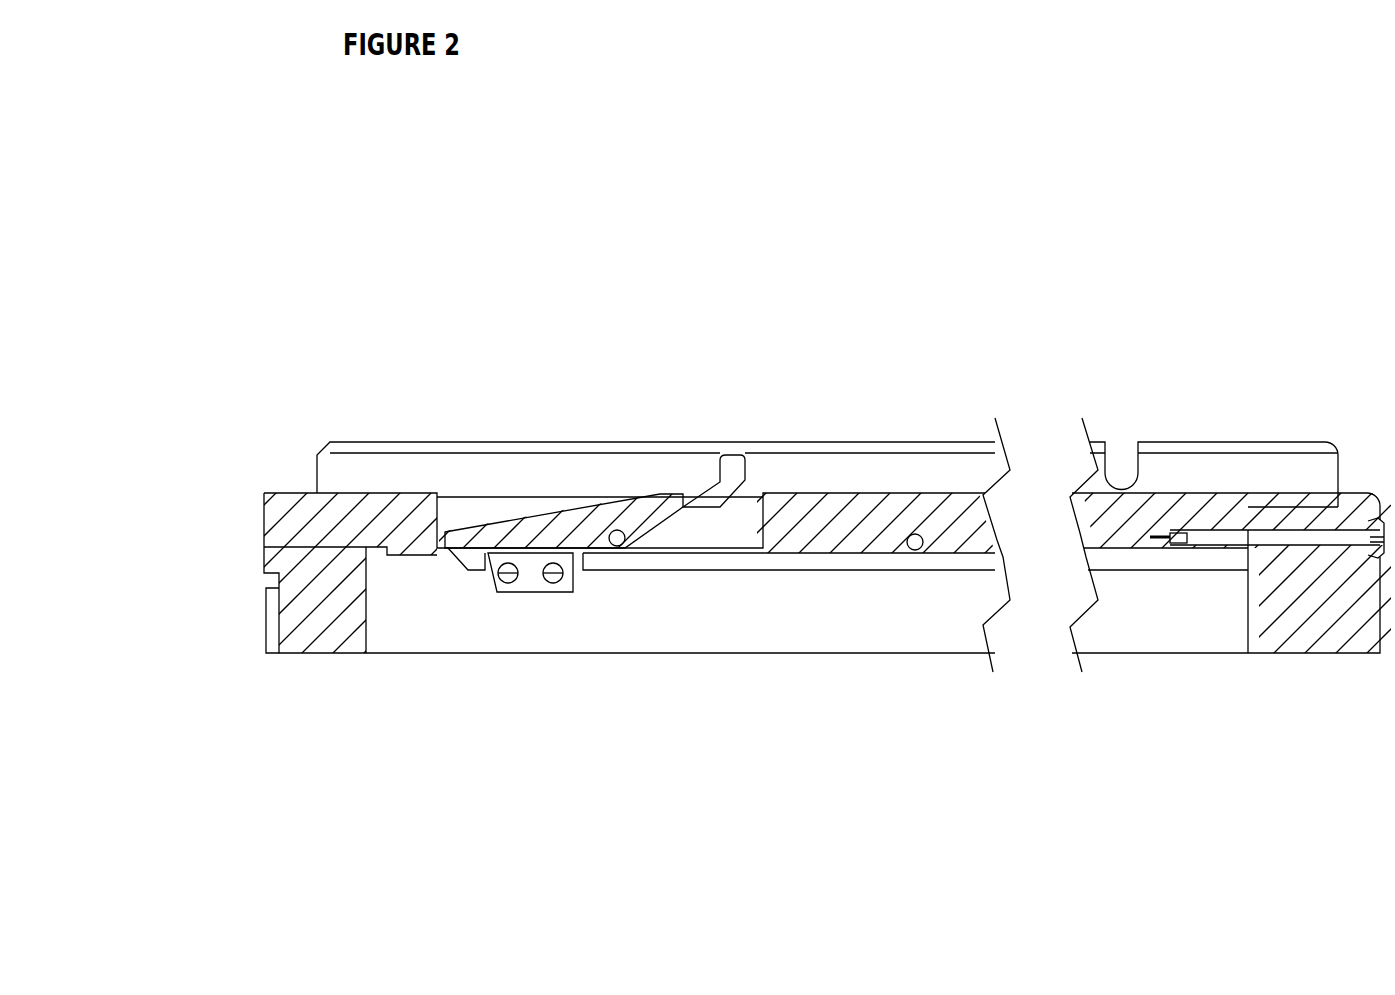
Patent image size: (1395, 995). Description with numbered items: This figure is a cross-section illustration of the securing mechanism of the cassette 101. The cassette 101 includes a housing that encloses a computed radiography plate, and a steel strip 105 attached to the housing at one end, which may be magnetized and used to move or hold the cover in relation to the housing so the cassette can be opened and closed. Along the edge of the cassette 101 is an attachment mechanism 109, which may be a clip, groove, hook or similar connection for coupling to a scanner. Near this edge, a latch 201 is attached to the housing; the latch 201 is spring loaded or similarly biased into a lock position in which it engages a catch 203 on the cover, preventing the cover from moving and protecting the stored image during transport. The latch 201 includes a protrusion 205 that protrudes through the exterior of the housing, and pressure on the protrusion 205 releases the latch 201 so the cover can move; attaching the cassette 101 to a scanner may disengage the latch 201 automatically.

The cassette 101 is at (264, 508).
The steel strip 105 is at (262, 628).
The attachment mechanism 109 is at (573, 443).
The latch 201 is at (588, 527).
The catch 203 is at (525, 592).
The protrusion 205 is at (738, 442).